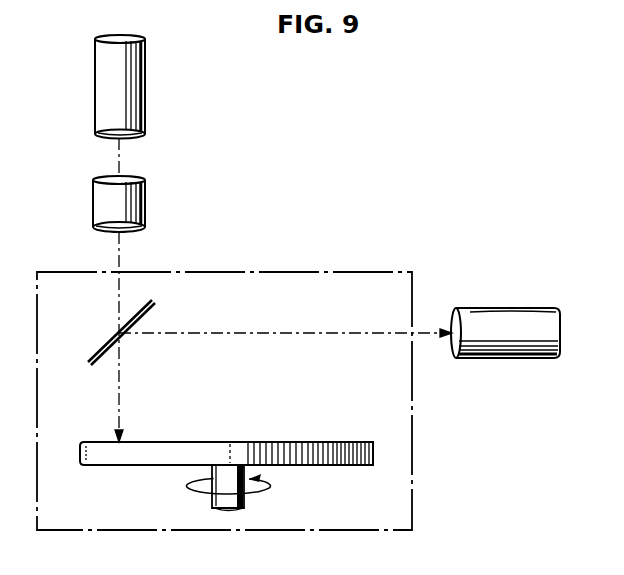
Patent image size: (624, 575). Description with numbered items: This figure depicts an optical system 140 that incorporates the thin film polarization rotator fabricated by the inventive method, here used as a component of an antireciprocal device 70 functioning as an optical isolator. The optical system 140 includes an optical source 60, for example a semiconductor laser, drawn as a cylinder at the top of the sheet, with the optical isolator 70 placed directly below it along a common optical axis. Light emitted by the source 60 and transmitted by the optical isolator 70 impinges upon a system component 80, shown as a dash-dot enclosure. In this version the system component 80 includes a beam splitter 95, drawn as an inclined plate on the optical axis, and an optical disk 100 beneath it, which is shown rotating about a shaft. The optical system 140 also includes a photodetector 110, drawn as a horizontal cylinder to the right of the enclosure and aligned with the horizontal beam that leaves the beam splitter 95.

The optical source 60 is at (100, 90).
The antireciprocal device 70 is at (100, 203).
The system component 80 is at (290, 284).
The beam splitter 95 is at (147, 312).
The optical disk 100 is at (158, 446).
The photodetector 110 is at (503, 311).
The optical system 140 is at (276, 191).